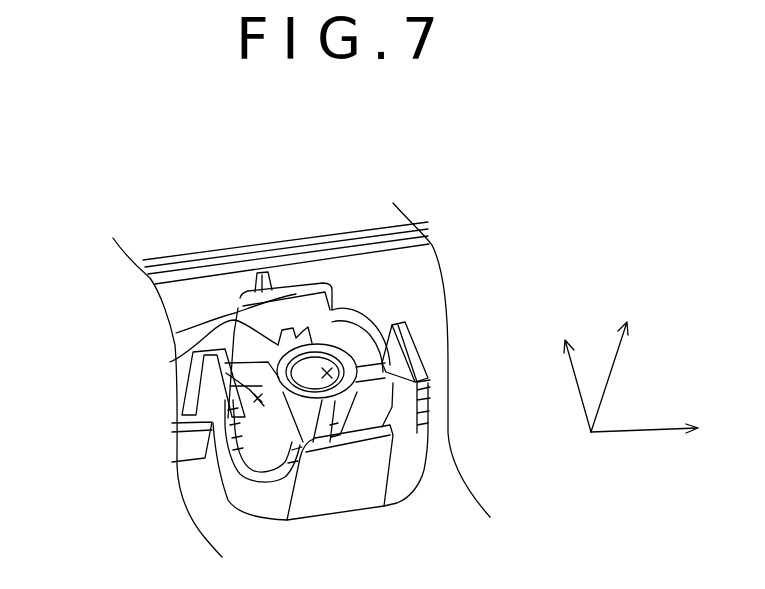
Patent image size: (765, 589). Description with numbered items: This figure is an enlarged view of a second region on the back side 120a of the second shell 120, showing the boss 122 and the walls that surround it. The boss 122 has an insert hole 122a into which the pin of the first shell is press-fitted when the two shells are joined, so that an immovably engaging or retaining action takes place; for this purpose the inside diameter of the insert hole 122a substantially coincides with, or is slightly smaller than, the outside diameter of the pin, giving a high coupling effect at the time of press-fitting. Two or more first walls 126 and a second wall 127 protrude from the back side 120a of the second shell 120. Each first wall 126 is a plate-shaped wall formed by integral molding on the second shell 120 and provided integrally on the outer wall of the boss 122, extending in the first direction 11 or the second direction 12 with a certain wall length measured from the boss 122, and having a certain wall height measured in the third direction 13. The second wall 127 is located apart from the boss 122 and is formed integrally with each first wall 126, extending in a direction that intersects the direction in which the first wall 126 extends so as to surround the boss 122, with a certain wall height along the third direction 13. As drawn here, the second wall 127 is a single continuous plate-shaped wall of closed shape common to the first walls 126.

The first direction 11 is at (657, 442).
The second direction 12 is at (562, 375).
The third direction 13 is at (628, 368).
The second shell 120 is at (431, 244).
The back side 120a is at (194, 487).
The boss 122 is at (317, 346).
The insert hole 122a is at (340, 373).
The first wall 126 is at (170, 362).
The second wall 127 is at (413, 355).